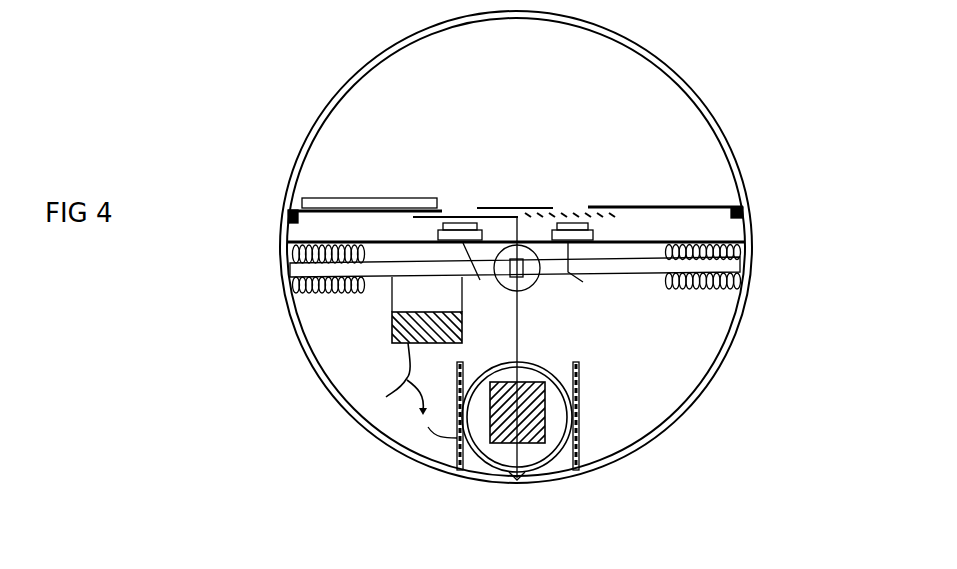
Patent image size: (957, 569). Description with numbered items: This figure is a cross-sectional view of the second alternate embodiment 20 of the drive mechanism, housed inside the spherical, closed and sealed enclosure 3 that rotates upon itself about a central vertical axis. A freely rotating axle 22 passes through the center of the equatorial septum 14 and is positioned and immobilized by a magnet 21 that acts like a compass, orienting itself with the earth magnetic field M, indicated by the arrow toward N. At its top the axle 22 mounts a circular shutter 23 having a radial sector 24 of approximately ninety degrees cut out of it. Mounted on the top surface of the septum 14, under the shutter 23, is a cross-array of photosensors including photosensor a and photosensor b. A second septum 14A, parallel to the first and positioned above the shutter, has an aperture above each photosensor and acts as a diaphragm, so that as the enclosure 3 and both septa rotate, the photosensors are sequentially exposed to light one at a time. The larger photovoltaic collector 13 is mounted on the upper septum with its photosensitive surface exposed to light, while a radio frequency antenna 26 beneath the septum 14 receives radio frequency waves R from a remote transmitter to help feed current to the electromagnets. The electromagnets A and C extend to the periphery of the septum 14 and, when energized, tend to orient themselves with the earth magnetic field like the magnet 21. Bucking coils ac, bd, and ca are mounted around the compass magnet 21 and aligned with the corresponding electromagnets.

The second alternate embodiment of the drive mechanism 20 is at (740, 107).
The enclosure 3 is at (698, 388).
The photovoltaic collector 13 is at (327, 198).
The equatorial septum 14 is at (693, 241).
The second septum 14A is at (617, 206).
The circular shutter 23 is at (428, 222).
The radial sector 24 is at (598, 222).
The axle 22 is at (518, 312).
The magnet 21 is at (527, 382).
The radio frequency antenna 26 is at (426, 356).
The electromagnet A is at (308, 297).
The electromagnet C is at (713, 283).
The photosensor a is at (476, 272).
The photosensor b is at (584, 269).
The bucking coil bd is at (508, 365).
The bucking coil ca is at (580, 435).
The bucking coil ac is at (439, 423).
The radio frequency waves R is at (238, 178).
The earth magnetic field M is at (672, 540).
The direction N is at (658, 558).